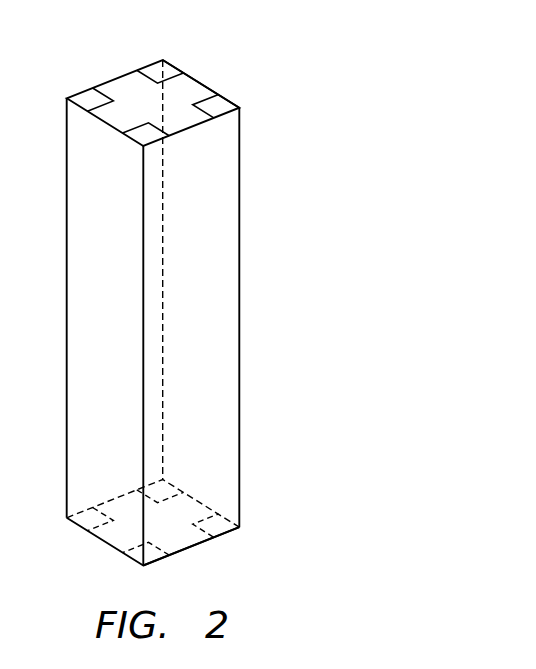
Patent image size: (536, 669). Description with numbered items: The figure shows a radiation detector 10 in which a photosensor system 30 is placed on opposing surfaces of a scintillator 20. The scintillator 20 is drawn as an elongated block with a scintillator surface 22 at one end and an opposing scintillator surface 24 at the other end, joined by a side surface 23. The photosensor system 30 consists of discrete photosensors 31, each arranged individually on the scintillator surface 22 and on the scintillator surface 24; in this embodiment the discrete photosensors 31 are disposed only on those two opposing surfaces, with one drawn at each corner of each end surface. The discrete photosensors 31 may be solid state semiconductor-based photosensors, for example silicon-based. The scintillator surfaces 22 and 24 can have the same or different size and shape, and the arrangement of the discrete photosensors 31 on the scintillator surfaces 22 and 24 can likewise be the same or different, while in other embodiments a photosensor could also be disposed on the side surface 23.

The radiation detector 10 is at (362, 102).
The scintillator 20 is at (265, 233).
The scintillator surface 22 is at (148, 110).
The side surface 23 is at (229, 308).
The scintillator surface 24 is at (102, 546).
The photosensor system 30 is at (208, 83).
The discrete photosensor 31 is at (220, 103).